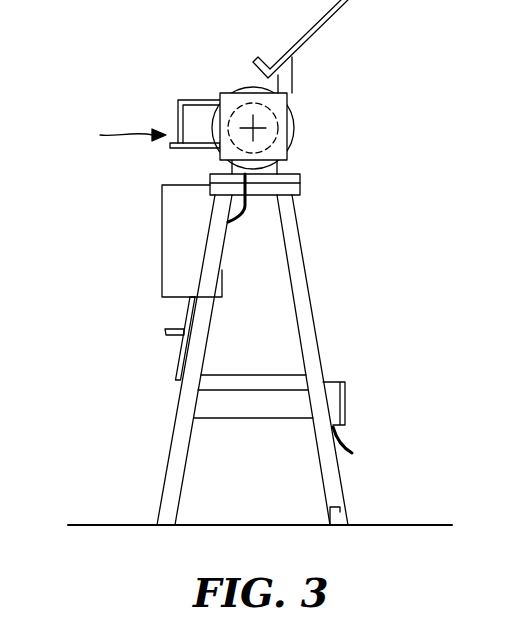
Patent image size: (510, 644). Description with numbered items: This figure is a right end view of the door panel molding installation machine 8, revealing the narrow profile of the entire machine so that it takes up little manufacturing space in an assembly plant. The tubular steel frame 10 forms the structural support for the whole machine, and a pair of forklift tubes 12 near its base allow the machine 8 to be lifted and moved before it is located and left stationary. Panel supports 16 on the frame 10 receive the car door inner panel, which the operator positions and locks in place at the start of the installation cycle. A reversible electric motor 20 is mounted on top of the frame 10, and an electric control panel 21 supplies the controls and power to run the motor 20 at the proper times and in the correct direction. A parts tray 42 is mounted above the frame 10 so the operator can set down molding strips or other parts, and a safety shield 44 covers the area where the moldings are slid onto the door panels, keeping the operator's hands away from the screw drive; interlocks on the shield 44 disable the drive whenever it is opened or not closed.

The door panel molding installation machine 8 is at (121, 133).
The tubular steel frame 10 is at (312, 302).
The forklift tubes 12 is at (257, 420).
The panel supports 16 is at (165, 332).
The reversible electric motor 20 is at (298, 127).
The electric control panel 21 is at (160, 225).
The parts tray 42 is at (320, 29).
The safety shield 44 is at (178, 113).